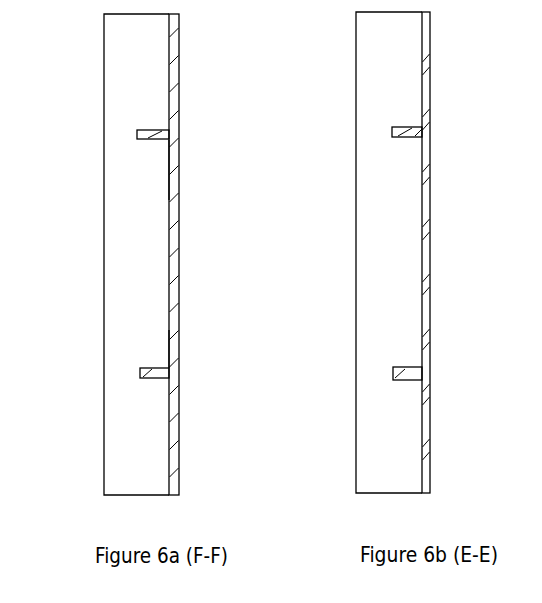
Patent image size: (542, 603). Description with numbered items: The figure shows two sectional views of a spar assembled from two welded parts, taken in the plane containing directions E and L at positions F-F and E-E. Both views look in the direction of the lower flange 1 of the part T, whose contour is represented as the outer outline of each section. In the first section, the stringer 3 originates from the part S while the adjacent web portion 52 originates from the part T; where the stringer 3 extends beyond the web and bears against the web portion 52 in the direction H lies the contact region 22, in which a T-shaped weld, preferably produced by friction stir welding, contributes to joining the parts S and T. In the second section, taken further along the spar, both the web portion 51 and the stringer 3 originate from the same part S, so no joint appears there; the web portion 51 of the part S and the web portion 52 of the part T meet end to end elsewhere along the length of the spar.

In FIG. 6A, the lower flange 1 is at (138, 277).
In FIG. 6B, the lower flange 1 is at (385, 293).
In FIG. 6A, the stringer 3 is at (144, 368).
In FIG. 6A, the part S is at (142, 108).
In FIG. 6B, the part S is at (434, 42).
In FIG. 6A, the part T is at (186, 56).
In FIG. 6A, the web portion 52 is at (176, 172).
In FIG. 6A, the contact region 22 is at (172, 360).
In FIG. 6B, the web portion 51 is at (428, 200).